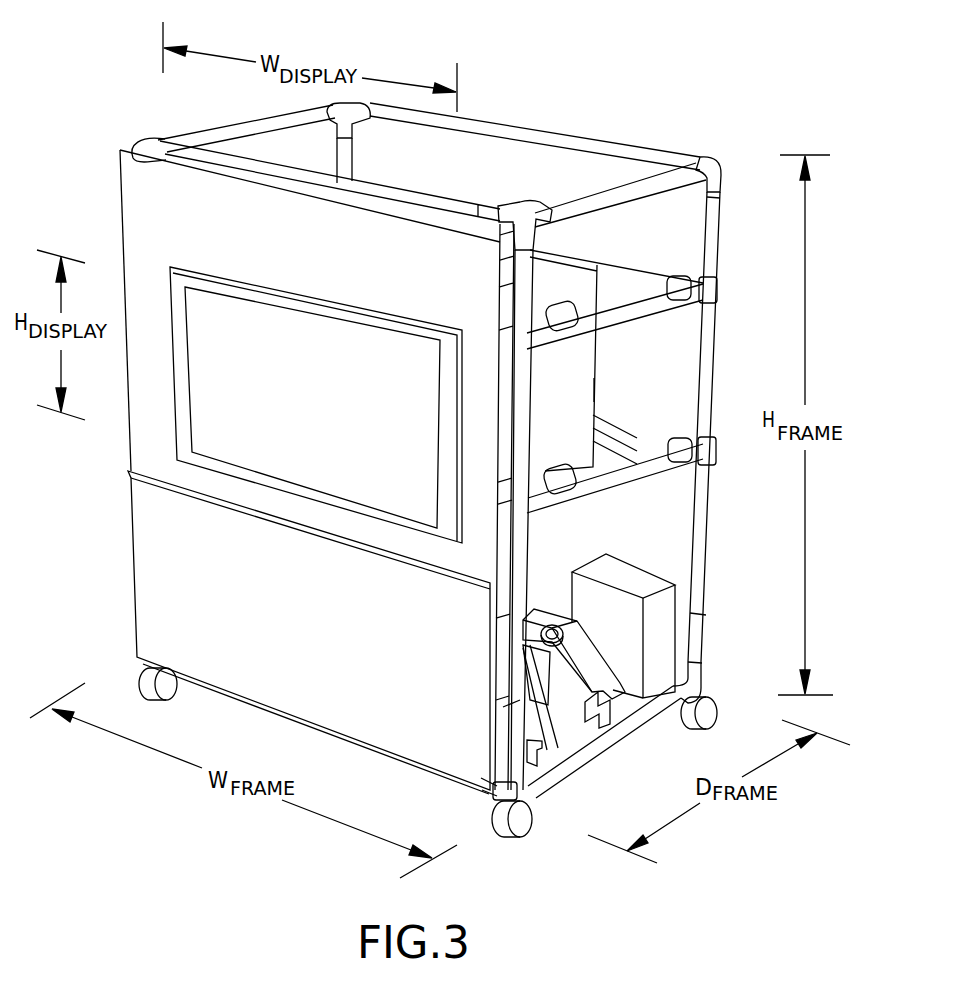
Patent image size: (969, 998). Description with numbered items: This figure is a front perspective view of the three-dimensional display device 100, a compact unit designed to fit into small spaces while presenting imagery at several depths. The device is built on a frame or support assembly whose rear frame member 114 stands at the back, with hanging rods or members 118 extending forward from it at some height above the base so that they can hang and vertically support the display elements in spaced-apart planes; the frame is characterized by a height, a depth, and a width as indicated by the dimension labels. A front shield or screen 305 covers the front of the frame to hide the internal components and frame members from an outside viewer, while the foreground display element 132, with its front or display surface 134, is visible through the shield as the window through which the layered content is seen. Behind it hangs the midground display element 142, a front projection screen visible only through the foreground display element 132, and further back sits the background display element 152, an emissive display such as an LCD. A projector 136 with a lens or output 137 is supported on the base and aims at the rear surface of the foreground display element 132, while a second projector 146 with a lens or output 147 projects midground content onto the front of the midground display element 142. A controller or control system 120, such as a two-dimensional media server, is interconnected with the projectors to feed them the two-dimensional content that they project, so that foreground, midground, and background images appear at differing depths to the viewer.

The 3D display device 100 is at (705, 81).
The rear frame member 114 is at (714, 236).
The hanging rods or members 118 is at (617, 310).
The controller or control system 120 is at (668, 620).
The foreground display element 132 is at (347, 283).
The front or display surface 134 is at (394, 350).
The projector 136 is at (612, 680).
The lens or output 137 is at (556, 625).
The midground display element 142 is at (583, 258).
The projector 146 is at (507, 800).
The lens or output 147 is at (542, 737).
The background display element 152 is at (612, 390).
The shield or screen 305 is at (128, 200).